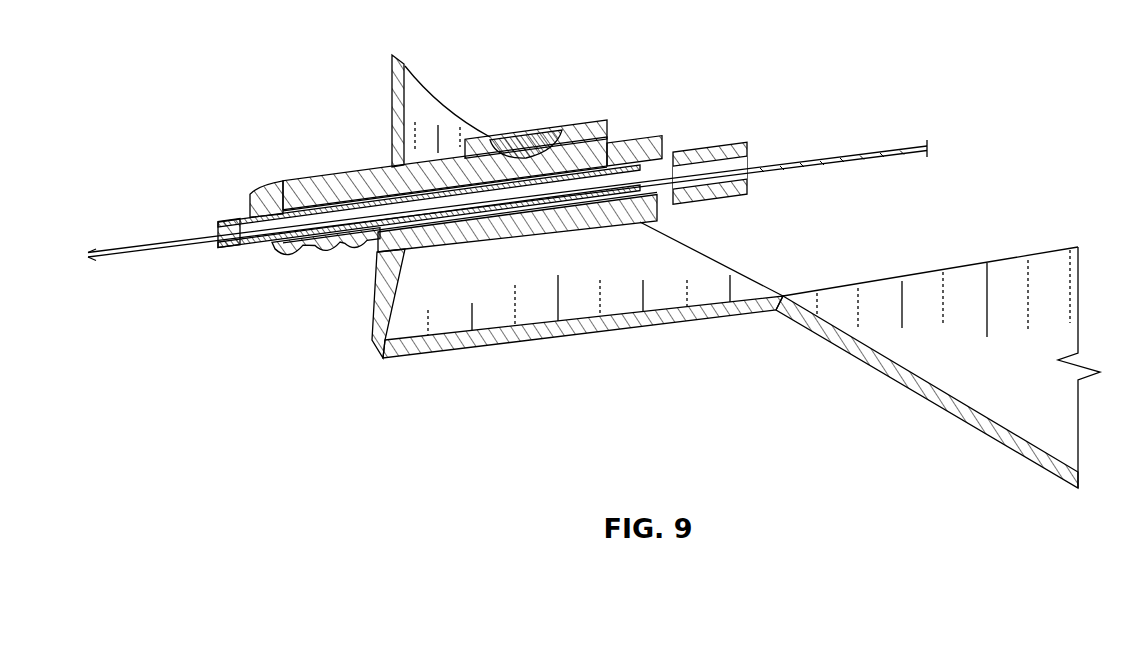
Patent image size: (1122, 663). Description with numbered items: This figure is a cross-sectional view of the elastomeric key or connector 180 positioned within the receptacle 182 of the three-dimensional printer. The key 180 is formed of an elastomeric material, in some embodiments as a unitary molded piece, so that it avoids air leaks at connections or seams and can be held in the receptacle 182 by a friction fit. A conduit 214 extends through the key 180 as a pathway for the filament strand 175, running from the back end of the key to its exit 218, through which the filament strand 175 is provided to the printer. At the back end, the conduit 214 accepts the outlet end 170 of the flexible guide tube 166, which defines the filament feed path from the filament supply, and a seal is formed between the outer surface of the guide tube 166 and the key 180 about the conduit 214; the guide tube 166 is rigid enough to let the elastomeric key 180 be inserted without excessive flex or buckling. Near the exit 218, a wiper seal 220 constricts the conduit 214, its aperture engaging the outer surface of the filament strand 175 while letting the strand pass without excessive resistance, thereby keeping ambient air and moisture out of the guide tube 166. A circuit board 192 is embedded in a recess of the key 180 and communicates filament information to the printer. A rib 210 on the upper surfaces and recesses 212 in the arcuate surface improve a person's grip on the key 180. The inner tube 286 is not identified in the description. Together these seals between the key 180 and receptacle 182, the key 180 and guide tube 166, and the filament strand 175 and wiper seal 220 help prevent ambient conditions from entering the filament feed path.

The guide tube 166 is at (243, 224).
The outlet end 170 is at (587, 173).
The filament strand 175 is at (111, 256).
The key 180 is at (343, 263).
The receptacle 182 is at (430, 137).
The circuit board 192 is at (452, 167).
The rib 210 is at (317, 173).
The recess 212 is at (313, 253).
The conduit 214 is at (280, 212).
The exit 218 is at (663, 193).
The wiper seal 220 is at (641, 165).
The inner tube 286 is at (273, 256).